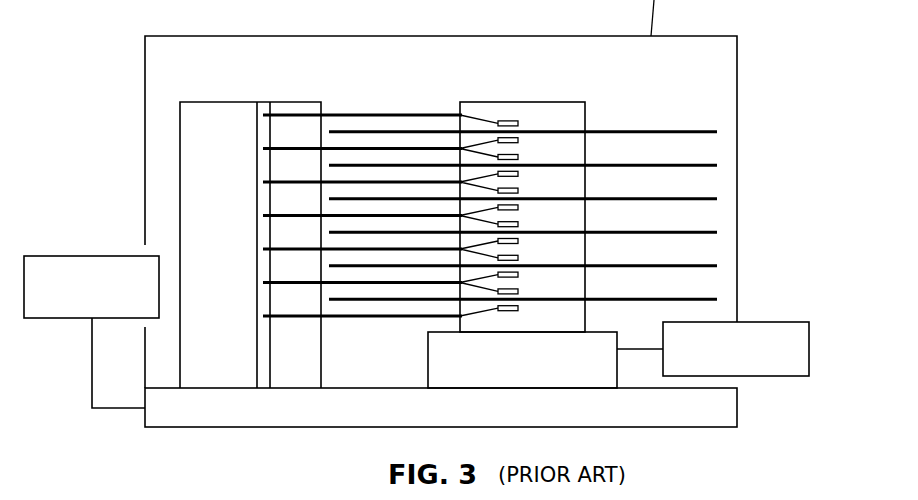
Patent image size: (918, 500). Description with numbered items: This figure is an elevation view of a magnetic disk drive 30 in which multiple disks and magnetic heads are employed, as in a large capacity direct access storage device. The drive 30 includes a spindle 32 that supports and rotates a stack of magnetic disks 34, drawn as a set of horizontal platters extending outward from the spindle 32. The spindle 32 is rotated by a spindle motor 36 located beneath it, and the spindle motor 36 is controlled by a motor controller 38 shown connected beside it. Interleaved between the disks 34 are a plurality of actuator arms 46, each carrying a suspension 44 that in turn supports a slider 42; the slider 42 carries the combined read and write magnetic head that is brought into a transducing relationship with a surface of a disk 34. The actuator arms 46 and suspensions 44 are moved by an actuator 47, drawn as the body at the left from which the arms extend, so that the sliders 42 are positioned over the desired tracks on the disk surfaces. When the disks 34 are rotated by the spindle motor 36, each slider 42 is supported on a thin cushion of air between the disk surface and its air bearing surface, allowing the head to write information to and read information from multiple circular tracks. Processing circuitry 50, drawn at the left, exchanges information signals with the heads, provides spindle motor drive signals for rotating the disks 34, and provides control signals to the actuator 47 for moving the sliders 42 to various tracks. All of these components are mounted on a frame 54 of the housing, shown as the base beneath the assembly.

The magnetic disk drive 30 is at (632, 107).
The spindle 32 is at (576, 102).
The magnetic disk 34 is at (717, 132).
The spindle motor 36 is at (537, 371).
The motor controller 38 is at (770, 376).
The slider 42 is at (518, 140).
The suspension 44 is at (486, 148).
The actuator arm 46 is at (432, 148).
The actuator 47 is at (210, 102).
The processing circuitry 50 is at (62, 256).
The frame 54 is at (195, 428).